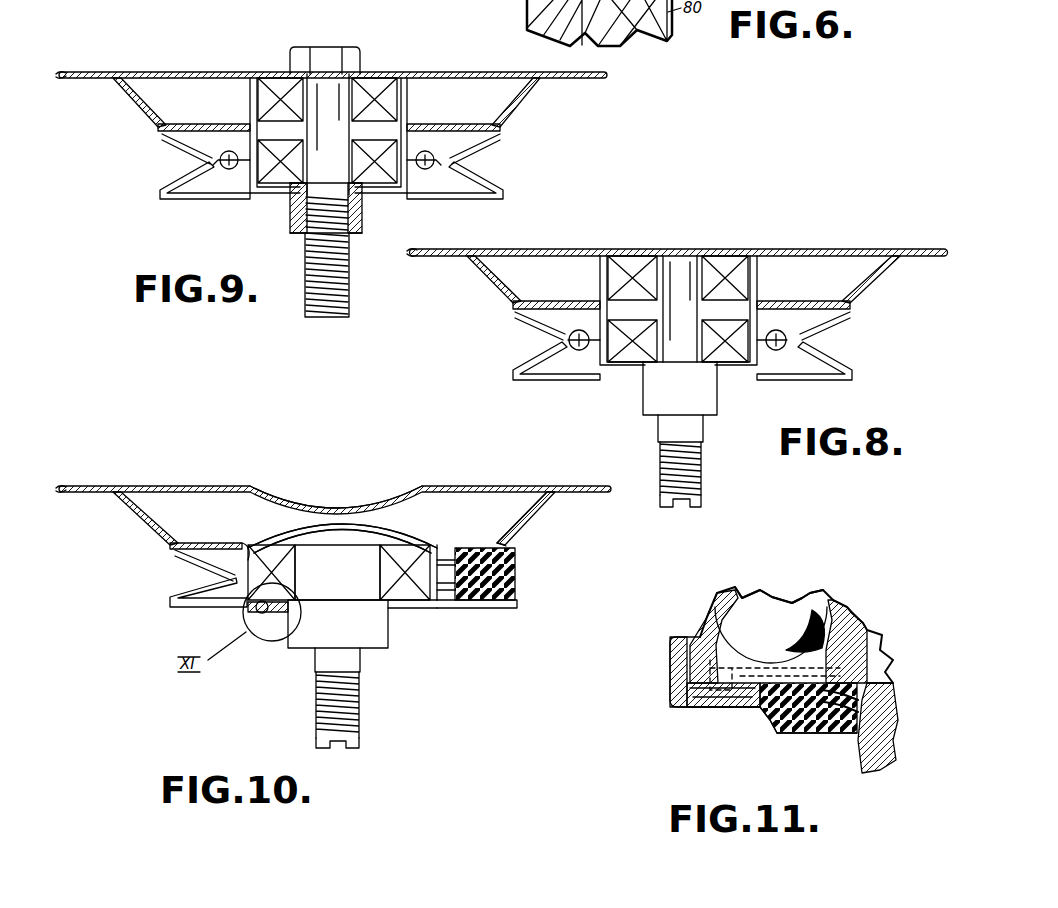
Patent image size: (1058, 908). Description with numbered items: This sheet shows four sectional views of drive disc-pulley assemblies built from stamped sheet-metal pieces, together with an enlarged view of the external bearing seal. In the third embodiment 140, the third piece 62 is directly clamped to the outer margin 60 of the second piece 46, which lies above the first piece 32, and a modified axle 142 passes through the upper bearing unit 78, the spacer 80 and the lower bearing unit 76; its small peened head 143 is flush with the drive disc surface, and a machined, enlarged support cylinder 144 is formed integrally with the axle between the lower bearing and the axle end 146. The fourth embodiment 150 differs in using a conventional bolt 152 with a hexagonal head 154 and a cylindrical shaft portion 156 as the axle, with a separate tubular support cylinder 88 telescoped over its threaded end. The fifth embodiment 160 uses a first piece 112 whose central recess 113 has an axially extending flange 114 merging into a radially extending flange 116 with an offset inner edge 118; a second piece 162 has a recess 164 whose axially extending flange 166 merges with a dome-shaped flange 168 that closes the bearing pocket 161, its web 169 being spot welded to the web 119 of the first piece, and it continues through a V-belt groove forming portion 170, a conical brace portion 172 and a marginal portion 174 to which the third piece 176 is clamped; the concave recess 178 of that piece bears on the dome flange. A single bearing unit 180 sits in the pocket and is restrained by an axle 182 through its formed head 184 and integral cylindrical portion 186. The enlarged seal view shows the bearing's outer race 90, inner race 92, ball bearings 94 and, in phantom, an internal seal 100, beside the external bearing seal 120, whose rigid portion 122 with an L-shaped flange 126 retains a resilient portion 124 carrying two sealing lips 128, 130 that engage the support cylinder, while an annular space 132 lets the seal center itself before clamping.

In FIG. 8, the first piece 32 is at (860, 365).
In FIG. 8, the second piece 46 is at (866, 300).
In FIG. 8, the outer margin of second piece 60 is at (929, 262).
In FIG. 8, the third piece 62 is at (811, 228).
In FIG. 9, the bearing unit 76 is at (266, 160).
In FIG. 8, the bearing unit 76 is at (628, 358).
In FIG. 11, the bearing unit 76 is at (760, 570).
In FIG. 9, the bearing unit 78 is at (400, 98).
In FIG. 8, the bearing unit 78 is at (722, 270).
In FIG. 9, the spacer 80 is at (260, 107).
In FIG. 9, the support cylinder 88 is at (364, 218).
In FIG. 11, the support cylinder 88 is at (882, 762).
In FIG. 11, the outer race 90 is at (712, 608).
In FIG. 11, the inner race 92 is at (838, 612).
In FIG. 11, the ball bearings 94 is at (773, 619).
In FIG. 11, the internal annular seal 100 is at (866, 627).
In FIG. 10, the first piece 112 is at (520, 607).
In FIG. 11, the first piece 112 is at (668, 654).
In FIG. 10, the central recess 113 is at (432, 604).
In FIG. 10, the axially extending flange 114 is at (226, 605).
In FIG. 11, the axially extending flange 114 is at (672, 681).
In FIG. 10, the radially extending flange 116 is at (248, 616).
In FIG. 11, the radially extending flange 116 is at (712, 703).
In FIG. 10, the inner edge 118 is at (266, 652).
In FIG. 11, the inner edge 118 is at (836, 736).
In FIG. 10, the web 119 is at (456, 606).
In FIG. 10, the external bearing seal 120 is at (403, 622).
In FIG. 11, the external bearing seal 120 is at (762, 717).
In FIG. 11, the rigid portion 122 is at (738, 709).
In FIG. 11, the resilient annular portion 124 is at (800, 732).
In FIG. 11, the L-shaped annular flange 126 is at (795, 698).
In FIG. 11, the sealing lip 128 is at (870, 711).
In FIG. 11, the sealing lip 130 is at (878, 675).
In FIG. 11, the annular space 132 is at (695, 690).
In FIG. 8, the third embodiment 140 is at (853, 236).
In FIG. 8, the axle 142 is at (693, 308).
In FIG. 8, the head 143 is at (679, 253).
In FIG. 8, the support cylinder 144 is at (692, 399).
In FIG. 8, the axle end 146 is at (704, 466).
In FIG. 9, the fourth embodiment 150 is at (268, 42).
In FIG. 9, the bolt 152 is at (347, 45).
In FIG. 9, the hexagonal head 154 is at (358, 62).
In FIG. 9, the cylindrical shaft portion 156 is at (325, 152).
In FIG. 10, the fifth embodiment 160 is at (413, 463).
In FIG. 10, the bearing pocket 161 is at (280, 530).
In FIG. 10, the second piece 162 is at (554, 510).
In FIG. 10, the central recess 164 is at (440, 531).
In FIG. 10, the axially extending flange 166 is at (246, 548).
In FIG. 10, the dome-shaped flange 168 is at (397, 521).
In FIG. 10, the web 169 is at (511, 537).
In FIG. 10, the V-belt groove forming portion 170 is at (192, 562).
In FIG. 10, the conical brace portion 172 is at (148, 518).
In FIG. 10, the marginal portion 174 is at (106, 490).
In FIG. 10, the third sheet metal piece 176 is at (560, 463).
In FIG. 10, the central recess 178 is at (408, 491).
In FIG. 10, the bearing unit 180 is at (416, 592).
In FIG. 10, the axle 182 is at (350, 587).
In FIG. 10, the formed head 184 is at (290, 538).
In FIG. 10, the cylindrical portion 186 is at (338, 624).